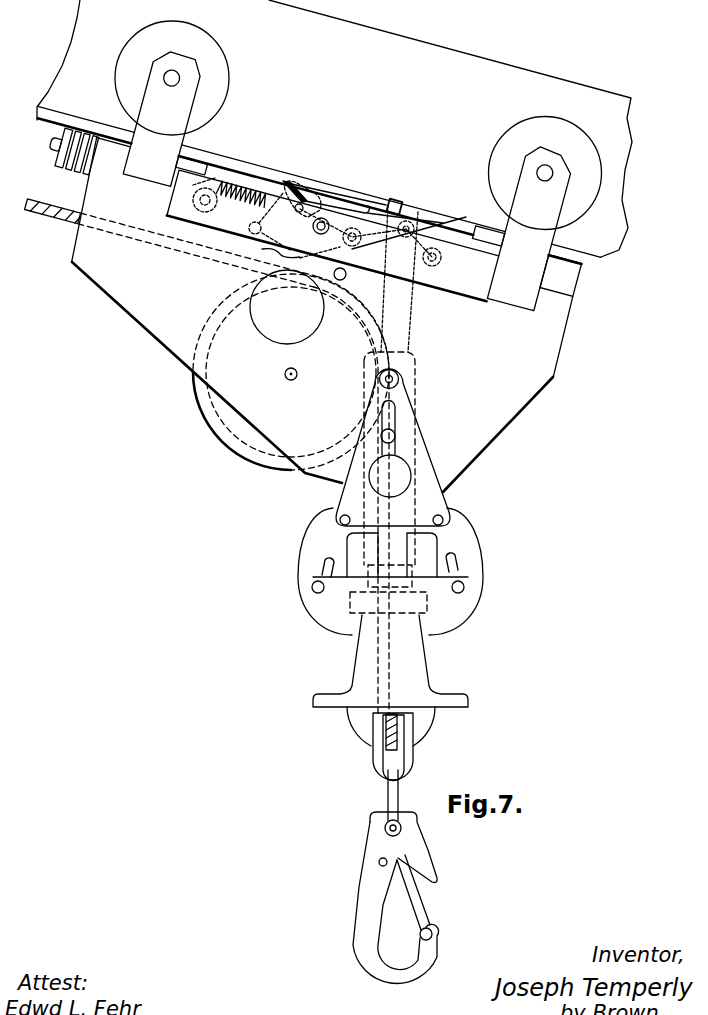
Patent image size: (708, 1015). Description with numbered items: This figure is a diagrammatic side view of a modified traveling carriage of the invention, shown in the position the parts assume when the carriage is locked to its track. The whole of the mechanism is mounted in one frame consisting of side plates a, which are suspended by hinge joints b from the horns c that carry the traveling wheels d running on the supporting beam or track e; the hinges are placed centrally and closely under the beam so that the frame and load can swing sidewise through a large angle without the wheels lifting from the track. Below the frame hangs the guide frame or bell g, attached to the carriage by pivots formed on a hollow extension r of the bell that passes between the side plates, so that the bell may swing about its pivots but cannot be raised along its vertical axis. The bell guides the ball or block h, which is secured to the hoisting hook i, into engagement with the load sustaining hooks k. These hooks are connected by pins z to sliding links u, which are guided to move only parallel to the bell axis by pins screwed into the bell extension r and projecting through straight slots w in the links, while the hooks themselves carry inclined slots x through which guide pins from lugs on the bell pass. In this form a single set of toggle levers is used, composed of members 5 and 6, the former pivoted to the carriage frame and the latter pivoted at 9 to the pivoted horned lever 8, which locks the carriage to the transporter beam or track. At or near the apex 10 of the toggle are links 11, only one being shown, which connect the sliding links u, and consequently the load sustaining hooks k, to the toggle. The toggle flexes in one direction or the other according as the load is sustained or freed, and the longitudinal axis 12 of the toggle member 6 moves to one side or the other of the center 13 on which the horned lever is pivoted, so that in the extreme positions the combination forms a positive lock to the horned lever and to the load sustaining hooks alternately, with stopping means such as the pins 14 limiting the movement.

The side plates a is at (525, 366).
The hinge joints b is at (545, 277).
The horns c is at (345, 177).
The traveling wheels d is at (213, 74).
The supporting beam or track e is at (333, 134).
The toggle lever member 5 is at (440, 256).
The toggle lever member 6 is at (396, 199).
The pivoted horned lever 8 is at (335, 209).
The pivot 9 is at (352, 231).
The apex of the toggle 10 is at (408, 225).
The links 11 is at (401, 327).
The longitudinal axis of toggle member 12 is at (272, 252).
The center of the horned lever pivot 13 is at (317, 230).
The stop pins 14 is at (347, 276).
The hollow extension of the bell r is at (414, 388).
The straight slots w is at (393, 423).
The sliding links u is at (426, 487).
The pins z is at (343, 514).
The load sustaining hooks k is at (460, 538).
The inclined slots x is at (312, 567).
The guide frame or bell g is at (390, 661).
The ball or block h is at (428, 722).
The hoisting hook i is at (370, 880).